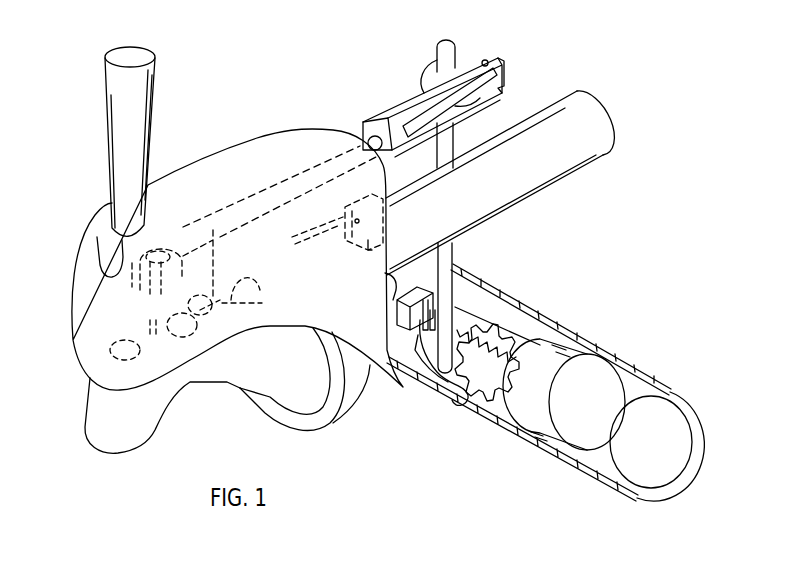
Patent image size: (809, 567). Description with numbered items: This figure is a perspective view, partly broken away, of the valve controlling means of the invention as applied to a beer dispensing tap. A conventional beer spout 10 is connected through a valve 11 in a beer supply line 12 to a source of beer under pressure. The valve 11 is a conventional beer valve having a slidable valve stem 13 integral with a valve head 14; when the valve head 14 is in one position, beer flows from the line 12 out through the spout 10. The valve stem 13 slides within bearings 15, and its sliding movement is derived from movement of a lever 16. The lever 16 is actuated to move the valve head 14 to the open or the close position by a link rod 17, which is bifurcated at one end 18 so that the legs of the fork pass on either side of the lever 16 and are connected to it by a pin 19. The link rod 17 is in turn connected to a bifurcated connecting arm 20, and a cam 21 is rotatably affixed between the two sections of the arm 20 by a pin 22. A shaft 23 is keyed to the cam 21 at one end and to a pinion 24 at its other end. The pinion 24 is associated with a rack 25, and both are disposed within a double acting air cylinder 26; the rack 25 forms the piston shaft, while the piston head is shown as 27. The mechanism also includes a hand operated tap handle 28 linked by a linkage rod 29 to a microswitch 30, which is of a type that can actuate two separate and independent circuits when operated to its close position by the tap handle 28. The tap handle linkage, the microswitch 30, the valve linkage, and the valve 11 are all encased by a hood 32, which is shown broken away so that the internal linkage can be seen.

The beer spout 10 is at (116, 457).
The valve 11 is at (150, 305).
The beer supply line 12 is at (593, 142).
The valve stem 13 is at (205, 310).
The valve head 14 is at (266, 295).
The bearings 15 is at (140, 346).
The lever 16 is at (140, 295).
The link rod 17 is at (241, 218).
The bifurcated end 18 is at (157, 248).
The pin 19 is at (165, 278).
The bifurcated connecting arm 20 is at (385, 118).
The cam 21 is at (466, 60).
The pin 22 is at (488, 58).
The shaft 23 is at (452, 48).
The pinion 24 is at (456, 382).
The rack 25 is at (472, 328).
The double acting air cylinder 26 is at (690, 404).
The piston head 27 is at (614, 368).
The tap handle 28 is at (145, 53).
The linkage rod 29 is at (311, 233).
The microswitch 30 is at (367, 250).
The hood 32 is at (78, 252).